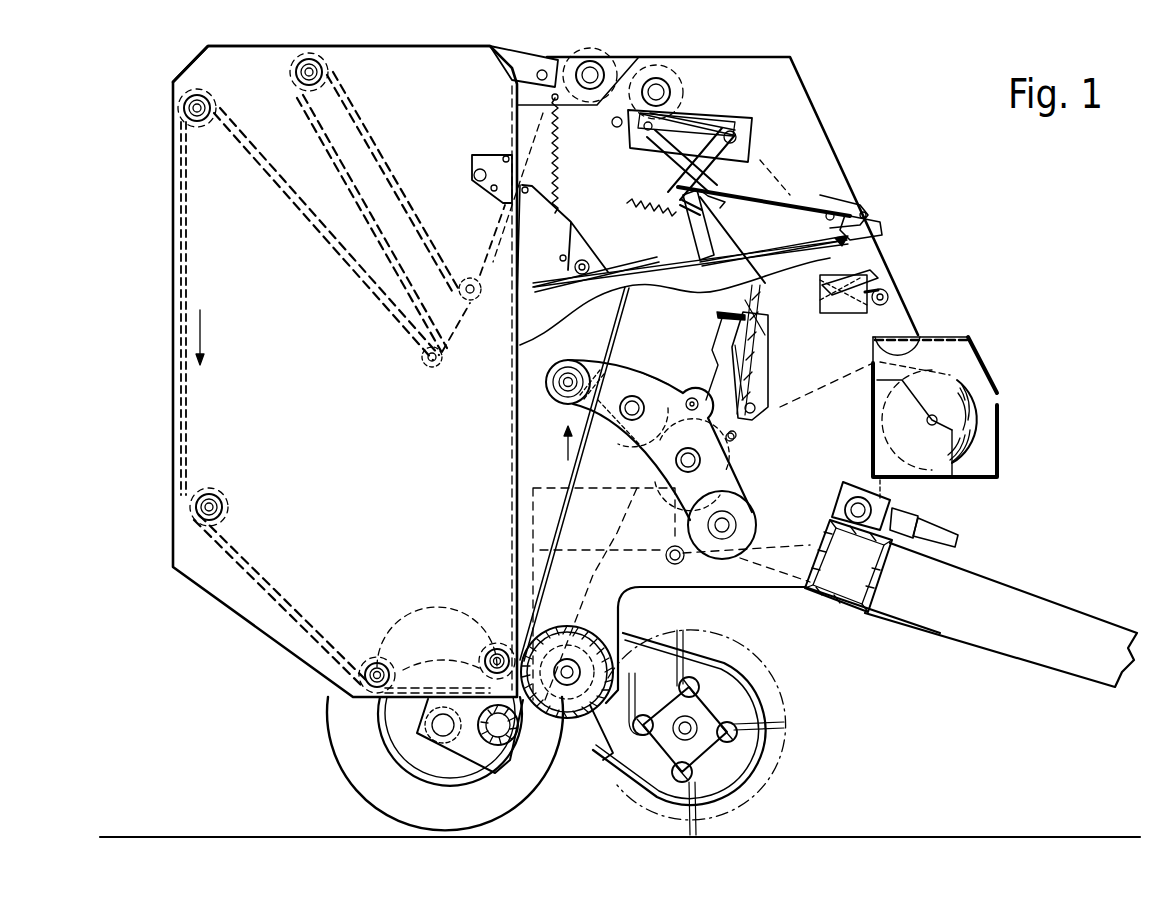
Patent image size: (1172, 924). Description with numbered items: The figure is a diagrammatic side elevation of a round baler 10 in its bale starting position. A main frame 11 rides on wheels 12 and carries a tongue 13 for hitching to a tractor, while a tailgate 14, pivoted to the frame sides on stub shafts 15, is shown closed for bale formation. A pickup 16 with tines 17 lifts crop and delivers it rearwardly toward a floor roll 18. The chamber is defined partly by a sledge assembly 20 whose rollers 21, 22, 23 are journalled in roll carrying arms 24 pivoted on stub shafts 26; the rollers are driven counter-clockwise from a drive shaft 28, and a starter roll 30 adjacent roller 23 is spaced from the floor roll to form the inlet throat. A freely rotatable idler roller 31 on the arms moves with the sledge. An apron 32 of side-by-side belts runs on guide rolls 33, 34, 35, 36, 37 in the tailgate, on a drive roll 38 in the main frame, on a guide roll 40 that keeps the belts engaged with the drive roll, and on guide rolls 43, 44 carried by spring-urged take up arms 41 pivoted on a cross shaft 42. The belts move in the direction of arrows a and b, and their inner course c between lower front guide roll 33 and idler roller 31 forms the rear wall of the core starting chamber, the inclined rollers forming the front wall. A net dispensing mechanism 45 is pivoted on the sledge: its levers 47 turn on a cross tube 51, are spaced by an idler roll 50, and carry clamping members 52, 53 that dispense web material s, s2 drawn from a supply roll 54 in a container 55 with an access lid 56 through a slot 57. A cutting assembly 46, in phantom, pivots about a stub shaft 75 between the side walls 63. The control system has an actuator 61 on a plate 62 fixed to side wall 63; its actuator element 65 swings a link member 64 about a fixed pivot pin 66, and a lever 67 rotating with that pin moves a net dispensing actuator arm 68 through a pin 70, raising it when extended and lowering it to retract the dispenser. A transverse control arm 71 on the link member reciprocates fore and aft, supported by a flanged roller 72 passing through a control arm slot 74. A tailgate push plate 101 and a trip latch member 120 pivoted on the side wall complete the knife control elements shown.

The round baler 10 is at (858, 84).
The main frame 11 is at (572, 553).
The wheels 12 is at (332, 745).
The tongue 13 is at (1022, 598).
The tailgate 14 is at (276, 46).
The stub shafts 15 is at (520, 80).
The pickup 16 is at (832, 731).
The tines 17 is at (695, 638).
The floor roll 18 is at (555, 760).
The sledge assembly 20 is at (637, 460).
The roller 21 is at (624, 380).
The roller 22 is at (708, 458).
The roller 23 is at (735, 510).
The roll carrying arms 24 is at (663, 386).
The stub shafts 26 is at (735, 575).
The drive shaft 28 is at (940, 532).
The starter roll 30 is at (666, 556).
The idler roller 31 is at (556, 368).
The apron 32 is at (176, 403).
The guide roll 33 is at (490, 650).
The guide roll 34 is at (372, 662).
The guide roll 35 is at (222, 504).
The guide roll 36 is at (200, 120).
The guide roll 37 is at (314, 88).
The drive roll 38 is at (658, 77).
The guide roll 40 is at (612, 121).
The take up arms 41 is at (486, 240).
The cross shaft 42 is at (590, 60).
The guide roll 43 is at (420, 350).
The guide roll 44 is at (482, 297).
The net dispensing mechanism 45 is at (770, 356).
The cutting assembly 46 is at (860, 248).
The levers 47 is at (768, 392).
The idler roll 50 is at (748, 410).
The cross tube 51 is at (705, 400).
The clamping member 52 is at (752, 280).
The clamping member 53 is at (722, 330).
The supply roll 54 is at (975, 395).
The container 55 is at (998, 446).
The access lid 56 is at (978, 338).
The slot 57 is at (918, 337).
The actuator 61 is at (683, 150).
The plate 62 is at (748, 140).
The side wall 63 is at (782, 94).
The link member 64 is at (745, 172).
The actuator element 65 is at (678, 185).
The pivot pin 66 is at (733, 130).
The lever 67 is at (825, 182).
The net dispensing actuator arm 68 is at (768, 350).
The pin 70 is at (795, 230).
The control arm 71 is at (738, 258).
The flanged roller 72 is at (888, 295).
The control arm slot 74 is at (868, 276).
The stub shaft 75 is at (830, 305).
The tailgate push plate 101 is at (500, 153).
The trip latch member 120 is at (858, 215).
The arrow a is at (556, 443).
The arrow b is at (208, 337).
The inner course c is at (532, 510).
The web material s is at (712, 330).
The web material s2 is at (866, 380).